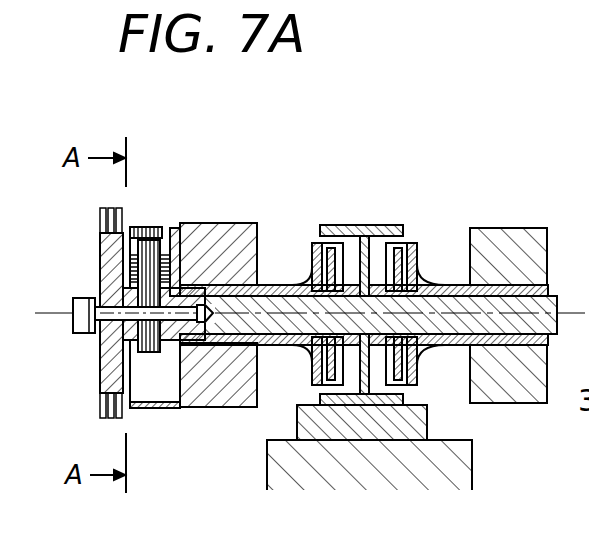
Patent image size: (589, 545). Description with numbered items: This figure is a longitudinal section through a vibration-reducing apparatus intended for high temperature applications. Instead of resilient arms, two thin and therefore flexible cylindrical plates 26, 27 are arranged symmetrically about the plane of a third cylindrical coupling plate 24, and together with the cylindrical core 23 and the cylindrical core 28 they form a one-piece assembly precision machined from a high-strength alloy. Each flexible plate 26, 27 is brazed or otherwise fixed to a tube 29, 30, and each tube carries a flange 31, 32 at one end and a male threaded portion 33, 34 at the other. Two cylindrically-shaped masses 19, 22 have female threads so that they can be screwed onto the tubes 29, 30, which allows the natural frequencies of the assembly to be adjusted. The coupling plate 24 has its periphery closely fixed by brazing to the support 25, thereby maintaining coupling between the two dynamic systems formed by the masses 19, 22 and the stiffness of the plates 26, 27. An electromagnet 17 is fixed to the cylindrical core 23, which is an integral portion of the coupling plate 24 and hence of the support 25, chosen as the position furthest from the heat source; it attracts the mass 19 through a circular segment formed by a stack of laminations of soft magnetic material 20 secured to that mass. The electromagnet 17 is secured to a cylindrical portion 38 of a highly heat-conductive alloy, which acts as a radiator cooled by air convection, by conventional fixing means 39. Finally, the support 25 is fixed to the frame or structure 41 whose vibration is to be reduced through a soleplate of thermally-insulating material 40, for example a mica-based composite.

The electromagnet 17 is at (190, 232).
The cylindrically-shaped mass 19 is at (240, 223).
The stack of laminations of soft magnetic material 20 is at (152, 228).
The cylindrically-shaped mass 22 is at (502, 237).
The cylindrical core 23 is at (208, 343).
The cylindrical coupling plate 24 is at (353, 225).
The support 25 is at (377, 225).
The cylindrical plate 26 is at (320, 372).
The cylindrical plate 27 is at (403, 370).
The cylindrical core 28 is at (527, 378).
The tube 29 is at (440, 357).
The tube 30 is at (283, 285).
The flange 31 is at (315, 243).
The flange 32 is at (423, 243).
The male threaded portion 33 is at (195, 347).
The male threaded portion 34 is at (520, 285).
The cylindrical portion 38 is at (113, 272).
The fixing means 39 is at (84, 322).
The soleplate of thermally-insulating material 40 is at (296, 442).
The frame or structure 41 is at (462, 473).